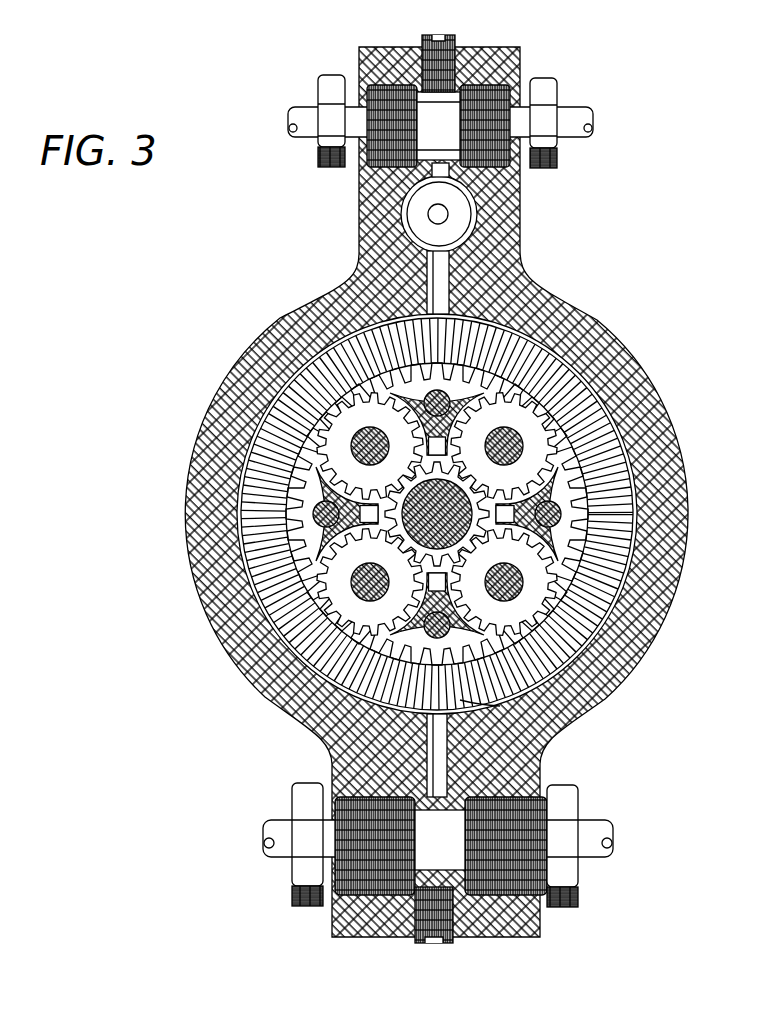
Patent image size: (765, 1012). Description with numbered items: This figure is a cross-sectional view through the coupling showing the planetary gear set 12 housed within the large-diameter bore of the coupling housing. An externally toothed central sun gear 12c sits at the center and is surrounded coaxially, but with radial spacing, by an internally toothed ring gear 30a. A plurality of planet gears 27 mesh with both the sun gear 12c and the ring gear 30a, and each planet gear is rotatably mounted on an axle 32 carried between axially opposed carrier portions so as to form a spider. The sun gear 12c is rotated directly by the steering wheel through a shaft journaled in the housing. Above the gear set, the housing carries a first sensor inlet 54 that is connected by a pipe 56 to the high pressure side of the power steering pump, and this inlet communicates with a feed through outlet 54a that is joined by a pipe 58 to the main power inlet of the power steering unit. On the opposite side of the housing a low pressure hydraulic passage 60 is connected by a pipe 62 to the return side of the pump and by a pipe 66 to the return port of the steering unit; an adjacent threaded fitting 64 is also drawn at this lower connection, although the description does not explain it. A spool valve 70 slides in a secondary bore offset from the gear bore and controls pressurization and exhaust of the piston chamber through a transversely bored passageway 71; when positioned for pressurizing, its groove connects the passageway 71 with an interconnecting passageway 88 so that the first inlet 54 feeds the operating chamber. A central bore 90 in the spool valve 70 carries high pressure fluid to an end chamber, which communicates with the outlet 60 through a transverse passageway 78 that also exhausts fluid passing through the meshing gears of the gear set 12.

The planetary gear set 12 is at (264, 607).
The central sun gear 12c is at (456, 497).
The planet gears 27 is at (337, 571).
The axles 32 is at (616, 600).
The ring gear 30a is at (478, 700).
The first sensor inlet 54 is at (490, 95).
The feed through outlet 54a is at (365, 166).
The pipe 56 is at (598, 133).
The pipe 58 is at (308, 105).
The low pressure hydraulic passage 60 is at (506, 893).
The pipe 62 is at (596, 832).
The threaded bushing 64 is at (358, 886).
The pipe 66 is at (266, 849).
The spool valve 70 is at (456, 200).
The passageway 71 is at (441, 278).
The transverse passageway 78 is at (442, 780).
The interconnecting passageway 88 is at (430, 172).
The central bore 90 is at (447, 218).